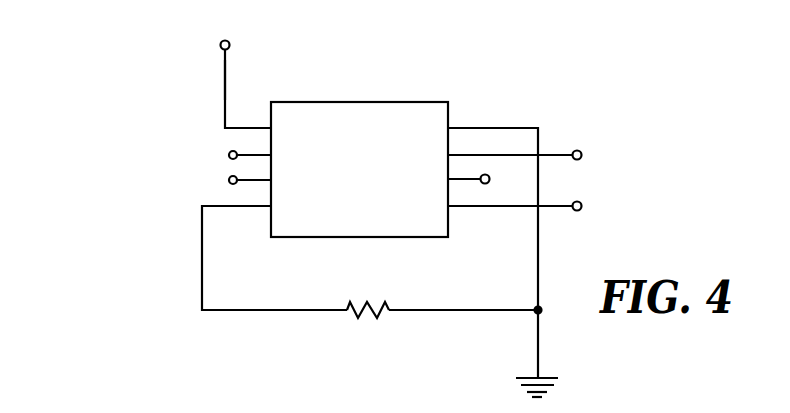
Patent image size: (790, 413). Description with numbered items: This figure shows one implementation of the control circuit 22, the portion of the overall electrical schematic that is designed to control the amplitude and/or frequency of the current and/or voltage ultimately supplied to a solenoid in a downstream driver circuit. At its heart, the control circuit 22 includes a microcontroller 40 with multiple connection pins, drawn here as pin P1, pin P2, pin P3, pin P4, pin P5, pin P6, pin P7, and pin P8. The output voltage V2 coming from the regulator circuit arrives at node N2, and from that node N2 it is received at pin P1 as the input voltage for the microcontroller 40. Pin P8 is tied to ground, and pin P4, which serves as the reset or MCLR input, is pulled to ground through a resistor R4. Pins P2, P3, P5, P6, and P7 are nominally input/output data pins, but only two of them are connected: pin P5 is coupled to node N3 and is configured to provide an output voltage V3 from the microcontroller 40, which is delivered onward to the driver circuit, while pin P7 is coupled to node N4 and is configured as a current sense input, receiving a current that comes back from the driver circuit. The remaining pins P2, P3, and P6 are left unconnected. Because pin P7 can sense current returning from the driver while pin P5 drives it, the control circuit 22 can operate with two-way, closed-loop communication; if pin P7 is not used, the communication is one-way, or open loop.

The control circuit 22 is at (127, 227).
The microcontroller 40 is at (412, 102).
The pin 1 P1 is at (248, 89).
The pin P2 is at (250, 147).
The pin P3 is at (250, 172).
The pin P4 is at (274, 248).
The pin P5 is at (510, 196).
The pin P6 is at (469, 172).
The pin P7 is at (510, 145).
The pin P8 is at (493, 244).
The node N2 is at (225, 34).
The node N3 is at (593, 205).
The node N4 is at (593, 154).
The resistor R4 is at (368, 299).
The output voltage V2 is at (200, 80).
The output voltage V3 is at (525, 195).